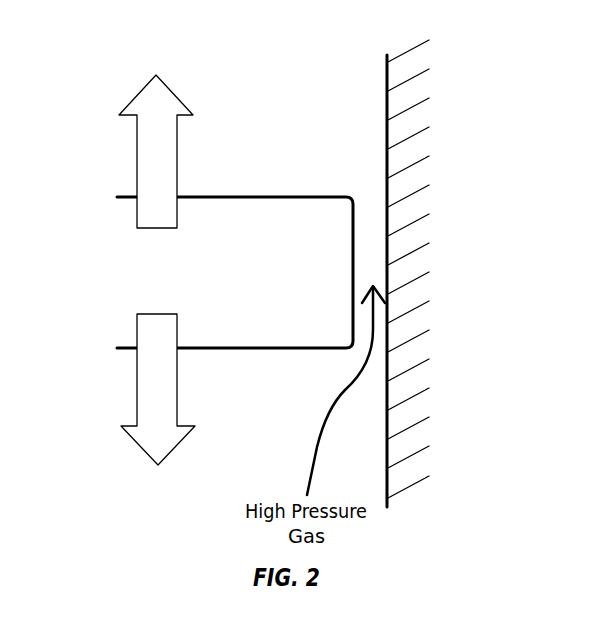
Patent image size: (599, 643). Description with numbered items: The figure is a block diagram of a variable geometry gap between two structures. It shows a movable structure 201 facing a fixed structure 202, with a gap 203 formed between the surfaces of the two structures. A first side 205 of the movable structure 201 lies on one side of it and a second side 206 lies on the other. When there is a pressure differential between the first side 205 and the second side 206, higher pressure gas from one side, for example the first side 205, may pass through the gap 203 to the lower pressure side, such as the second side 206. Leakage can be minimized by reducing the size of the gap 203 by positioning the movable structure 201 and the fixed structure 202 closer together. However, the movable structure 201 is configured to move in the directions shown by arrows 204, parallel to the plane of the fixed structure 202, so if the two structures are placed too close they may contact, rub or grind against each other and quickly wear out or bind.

The movable structure 201 is at (233, 265).
The fixed structure 202 is at (412, 176).
The gap 203 is at (370, 200).
The arrows 204 is at (152, 150).
The first side 205 is at (290, 433).
The second side 206 is at (287, 128).